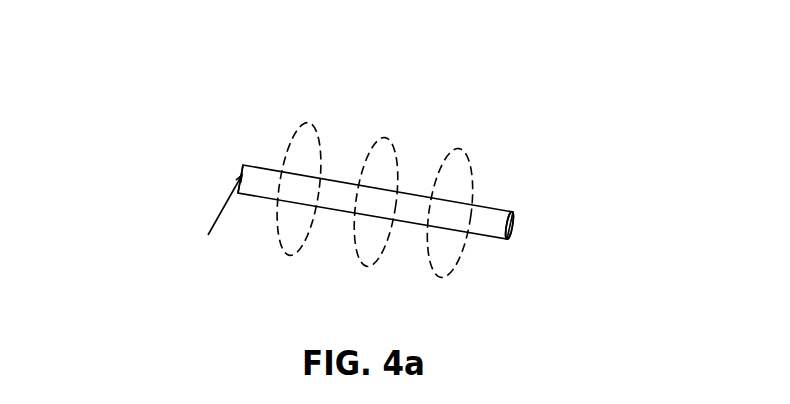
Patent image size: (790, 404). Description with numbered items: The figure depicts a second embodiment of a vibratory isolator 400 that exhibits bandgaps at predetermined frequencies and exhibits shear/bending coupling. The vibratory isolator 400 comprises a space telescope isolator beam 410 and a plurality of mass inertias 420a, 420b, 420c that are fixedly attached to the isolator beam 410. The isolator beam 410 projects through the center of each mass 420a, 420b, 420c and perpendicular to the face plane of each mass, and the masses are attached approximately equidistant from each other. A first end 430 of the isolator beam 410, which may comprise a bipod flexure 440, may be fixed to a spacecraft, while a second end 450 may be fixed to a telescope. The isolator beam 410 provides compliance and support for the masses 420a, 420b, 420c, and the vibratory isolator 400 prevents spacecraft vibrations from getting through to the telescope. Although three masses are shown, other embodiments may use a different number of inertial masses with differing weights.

The vibratory isolator 400 is at (357, 150).
The space telescope isolator beam 410 is at (376, 170).
The mass inertia 420a is at (350, 170).
The mass inertia 420b is at (470, 163).
The mass inertia 420c is at (545, 193).
The first end 430 is at (229, 147).
The bipod flexure 440 is at (184, 205).
The second end 450 is at (567, 207).